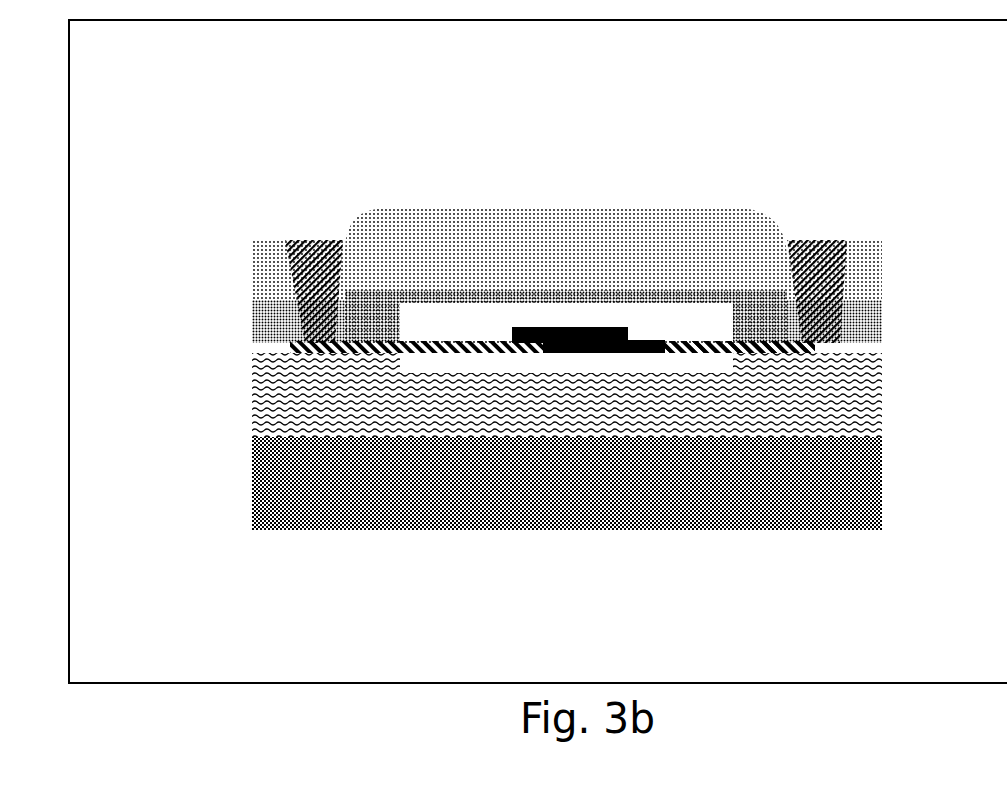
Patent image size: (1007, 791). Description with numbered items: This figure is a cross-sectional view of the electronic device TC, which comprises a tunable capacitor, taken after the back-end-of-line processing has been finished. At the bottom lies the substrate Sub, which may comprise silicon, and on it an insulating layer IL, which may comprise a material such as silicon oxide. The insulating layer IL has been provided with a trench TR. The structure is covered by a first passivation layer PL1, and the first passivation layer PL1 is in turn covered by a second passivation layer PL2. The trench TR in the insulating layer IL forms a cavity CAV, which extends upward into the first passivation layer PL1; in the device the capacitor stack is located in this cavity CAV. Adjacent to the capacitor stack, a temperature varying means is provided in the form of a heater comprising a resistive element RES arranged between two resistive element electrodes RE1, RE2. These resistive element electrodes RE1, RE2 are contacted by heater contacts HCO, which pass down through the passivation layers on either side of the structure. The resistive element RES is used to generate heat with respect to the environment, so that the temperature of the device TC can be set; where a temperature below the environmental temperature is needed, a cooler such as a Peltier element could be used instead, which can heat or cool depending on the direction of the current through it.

The electronic device TC is at (219, 164).
The heater contacts HCO is at (305, 268).
The cavity CAV is at (468, 308).
The first passivation layer PL1 is at (512, 290).
The second passivation layer PL2 is at (585, 248).
The trench TR is at (305, 343).
The resistive element electrode RE1 is at (420, 363).
The resistive element electrode RE2 is at (815, 346).
The insulating layer IL is at (835, 383).
The substrate Sub is at (828, 490).
The resistive element RES is at (585, 355).